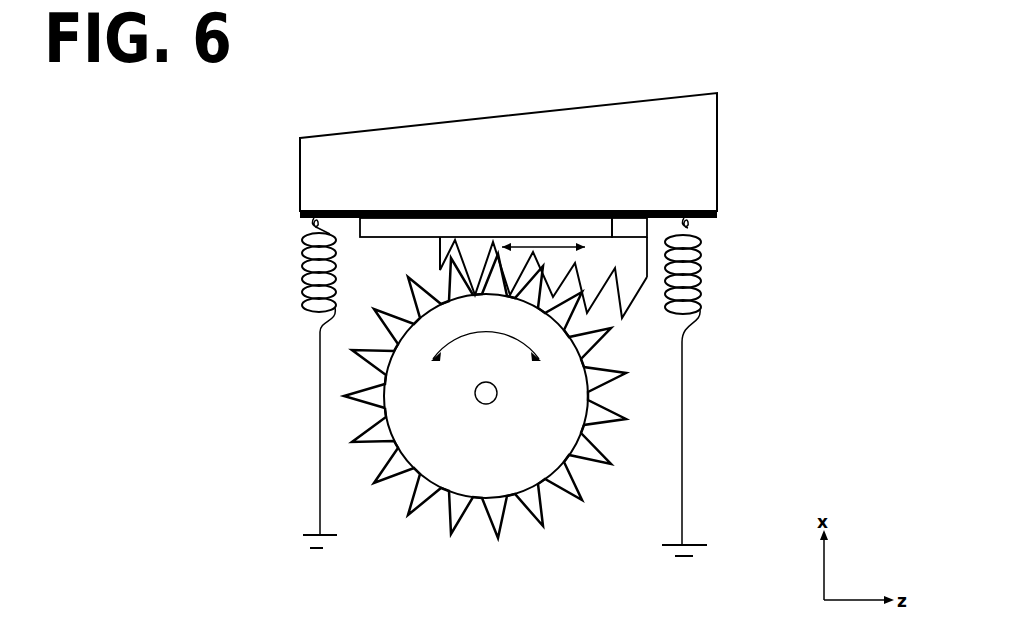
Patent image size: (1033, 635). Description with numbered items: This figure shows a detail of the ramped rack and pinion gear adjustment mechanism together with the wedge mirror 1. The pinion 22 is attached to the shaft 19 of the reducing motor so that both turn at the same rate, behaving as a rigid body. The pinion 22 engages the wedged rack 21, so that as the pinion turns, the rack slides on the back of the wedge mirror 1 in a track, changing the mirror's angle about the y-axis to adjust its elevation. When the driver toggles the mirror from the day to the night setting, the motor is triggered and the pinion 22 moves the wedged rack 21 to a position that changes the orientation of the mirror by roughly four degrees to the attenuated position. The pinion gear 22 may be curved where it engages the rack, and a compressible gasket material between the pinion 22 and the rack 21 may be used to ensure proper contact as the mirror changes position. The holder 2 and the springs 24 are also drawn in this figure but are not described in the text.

The slide body 1 is at (303, 138).
The holder 2 is at (690, 223).
The shaft 19 is at (488, 403).
The rack 21 is at (632, 290).
The gear 22 is at (458, 537).
The spring 24 is at (307, 307).